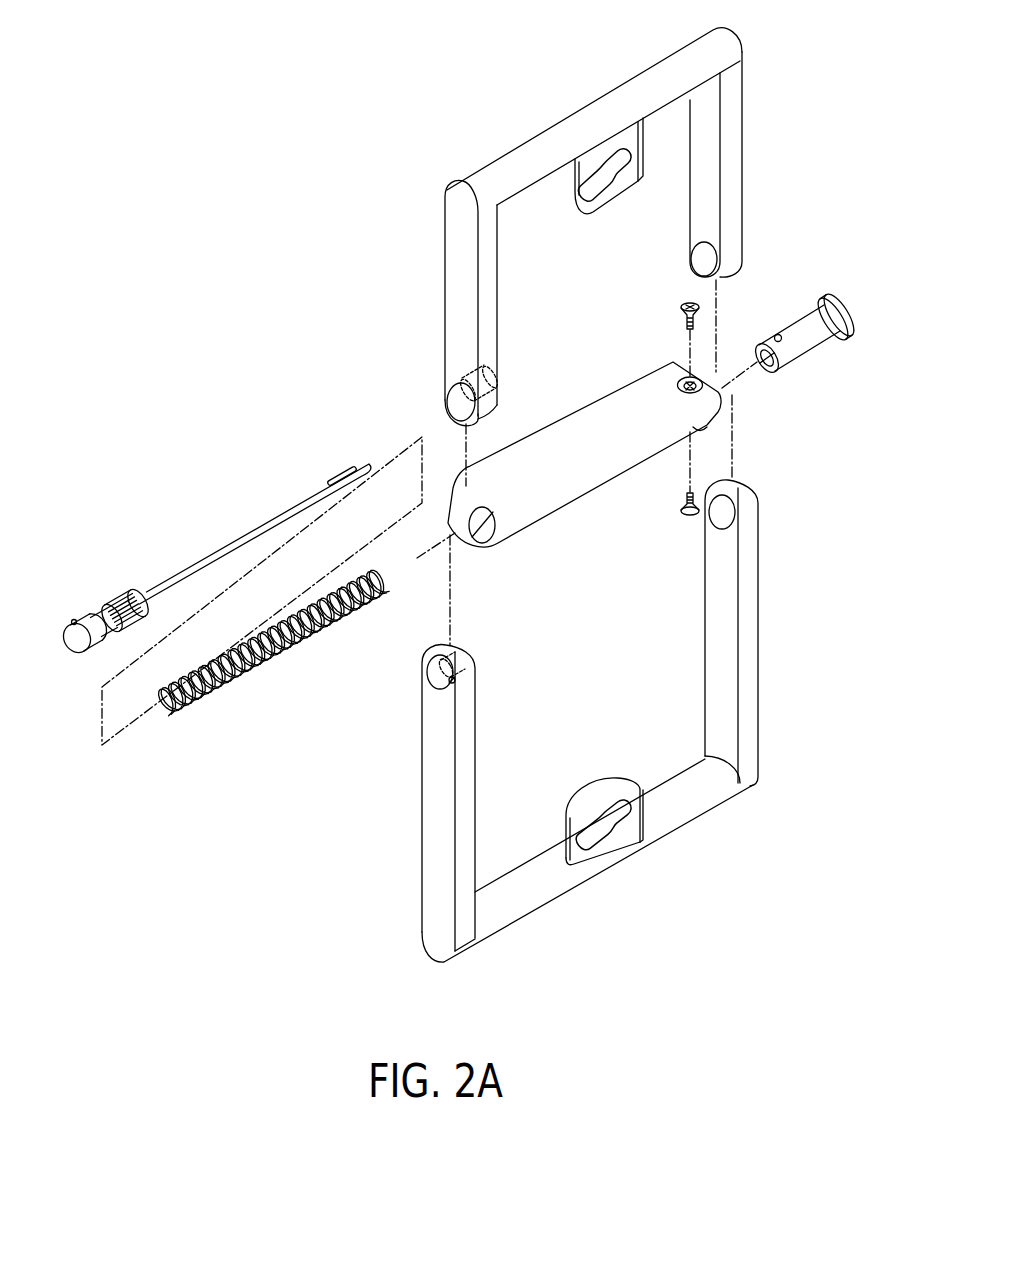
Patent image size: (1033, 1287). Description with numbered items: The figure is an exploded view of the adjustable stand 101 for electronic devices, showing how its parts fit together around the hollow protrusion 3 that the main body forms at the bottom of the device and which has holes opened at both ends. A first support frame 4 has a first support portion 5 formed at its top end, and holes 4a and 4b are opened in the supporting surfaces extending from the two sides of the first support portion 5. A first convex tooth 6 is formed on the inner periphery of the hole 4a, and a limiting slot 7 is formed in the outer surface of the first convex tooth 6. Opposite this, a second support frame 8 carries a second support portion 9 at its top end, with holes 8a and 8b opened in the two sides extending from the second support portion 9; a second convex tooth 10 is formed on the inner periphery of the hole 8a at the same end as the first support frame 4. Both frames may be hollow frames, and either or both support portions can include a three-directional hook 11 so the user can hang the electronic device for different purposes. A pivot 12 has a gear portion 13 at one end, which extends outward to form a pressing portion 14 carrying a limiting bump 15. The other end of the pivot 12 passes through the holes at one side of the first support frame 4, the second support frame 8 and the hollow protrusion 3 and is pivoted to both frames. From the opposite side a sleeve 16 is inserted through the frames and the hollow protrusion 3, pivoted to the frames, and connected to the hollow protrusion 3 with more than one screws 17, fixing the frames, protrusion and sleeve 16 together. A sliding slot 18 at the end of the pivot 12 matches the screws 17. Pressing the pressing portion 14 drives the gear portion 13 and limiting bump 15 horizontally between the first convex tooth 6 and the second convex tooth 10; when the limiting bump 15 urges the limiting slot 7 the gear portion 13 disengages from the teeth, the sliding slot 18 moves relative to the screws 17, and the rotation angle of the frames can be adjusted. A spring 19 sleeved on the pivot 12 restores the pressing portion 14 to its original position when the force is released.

The hollow protrusion 3 is at (597, 437).
The first support frame 4 is at (591, 721).
The hole 4a is at (440, 675).
The hole 4b is at (725, 512).
The first support portion 5 is at (688, 803).
The first convex tooth 6 is at (465, 673).
The limiting slot 7 is at (442, 690).
The second support frame 8 is at (592, 227).
The hole 8a is at (448, 402).
The hole 8b is at (703, 258).
The second support portion 9 is at (515, 165).
The second convex tooth 10 is at (482, 377).
The three-directional hook 11 is at (593, 200).
The pivot 12 is at (255, 513).
The gear portion 13 is at (122, 593).
The pressing portion 14 is at (75, 640).
The limiting bump 15 is at (74, 620).
The sleeve 16 is at (807, 340).
The screws 17 is at (685, 310).
The sliding slot 18 is at (352, 473).
The spring 19 is at (293, 647).
The adjustable stand 101 is at (412, 973).